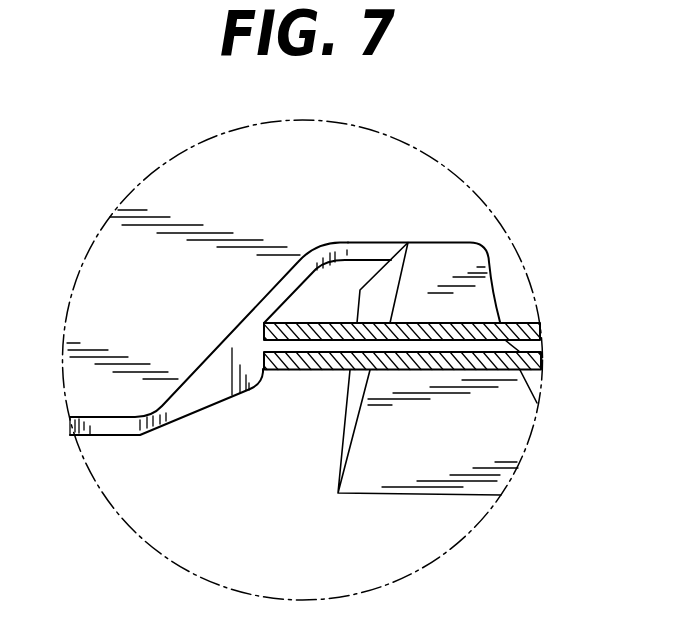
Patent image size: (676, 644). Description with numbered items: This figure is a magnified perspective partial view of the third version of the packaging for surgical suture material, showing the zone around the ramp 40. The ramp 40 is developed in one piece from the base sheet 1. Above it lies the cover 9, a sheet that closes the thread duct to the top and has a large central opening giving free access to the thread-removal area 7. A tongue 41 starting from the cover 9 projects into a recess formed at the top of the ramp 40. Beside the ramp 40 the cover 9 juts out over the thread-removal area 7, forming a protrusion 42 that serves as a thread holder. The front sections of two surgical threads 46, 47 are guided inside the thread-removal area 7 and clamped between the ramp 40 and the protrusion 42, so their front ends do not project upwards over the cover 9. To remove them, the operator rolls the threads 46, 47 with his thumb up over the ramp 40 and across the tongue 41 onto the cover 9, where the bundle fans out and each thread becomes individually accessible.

The base sheet 1 is at (267, 558).
The thread-removal area 7 is at (182, 493).
The cover 9 is at (277, 195).
The ramp 40 is at (448, 265).
The tongue 41 is at (508, 277).
The protrusion 42 is at (225, 383).
The surgical thread 46 is at (333, 330).
The surgical thread 47 is at (320, 370).